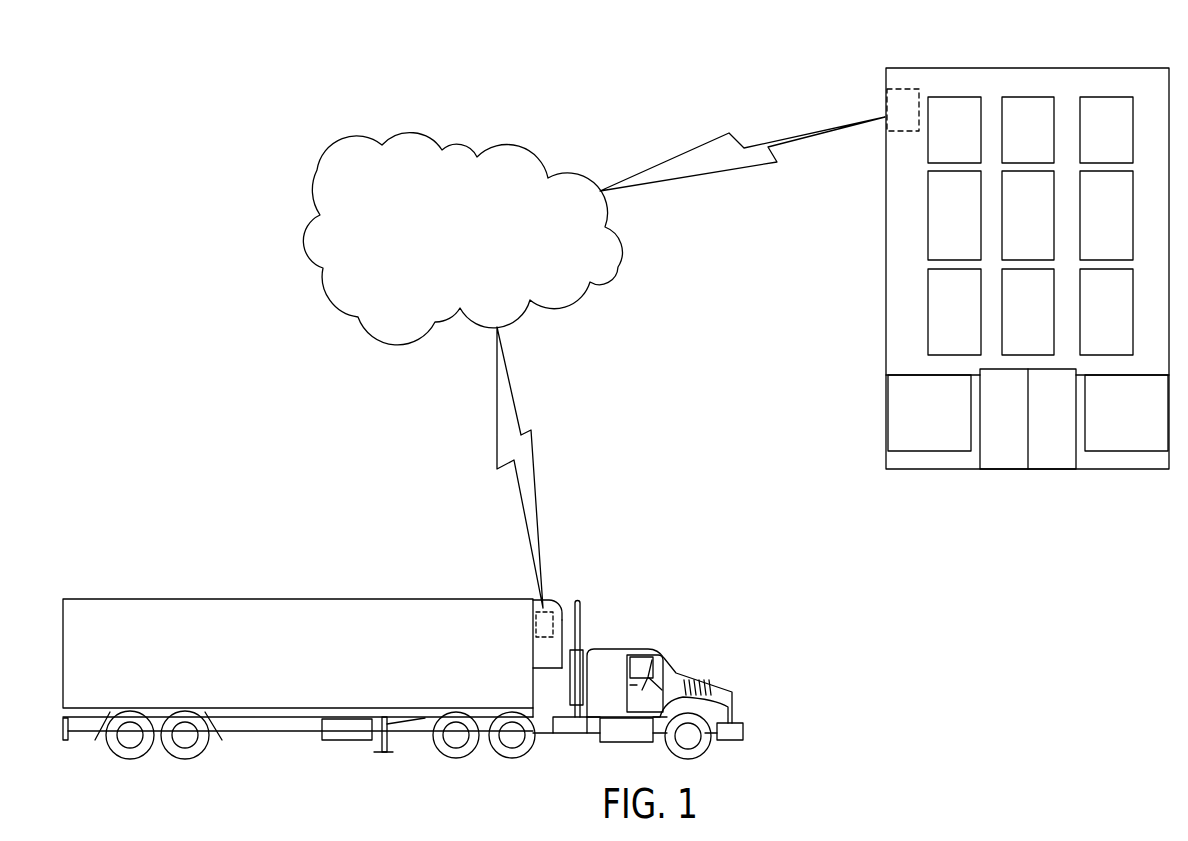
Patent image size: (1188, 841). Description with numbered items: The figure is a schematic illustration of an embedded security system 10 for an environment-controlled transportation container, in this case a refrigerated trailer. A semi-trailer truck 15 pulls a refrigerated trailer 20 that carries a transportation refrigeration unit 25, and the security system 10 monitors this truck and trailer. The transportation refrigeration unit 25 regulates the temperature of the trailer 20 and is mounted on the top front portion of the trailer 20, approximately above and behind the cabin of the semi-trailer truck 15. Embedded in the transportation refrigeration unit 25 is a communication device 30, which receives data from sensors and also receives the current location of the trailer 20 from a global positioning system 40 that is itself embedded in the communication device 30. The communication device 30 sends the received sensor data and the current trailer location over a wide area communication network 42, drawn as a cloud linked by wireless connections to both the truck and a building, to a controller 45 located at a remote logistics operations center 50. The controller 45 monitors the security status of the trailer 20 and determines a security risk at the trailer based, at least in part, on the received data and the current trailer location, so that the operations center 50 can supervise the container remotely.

The embedded security system 10 is at (236, 126).
The semi-trailer truck 15 is at (638, 639).
The refrigerated trailer 20 is at (138, 597).
The transportation refrigeration unit 25 is at (548, 606).
The communication device 30 is at (557, 608).
The global positioning system 40 is at (561, 630).
The wide area communication network 42 is at (411, 133).
The controller 45 is at (897, 97).
The remote logistics operations center 50 is at (1126, 68).